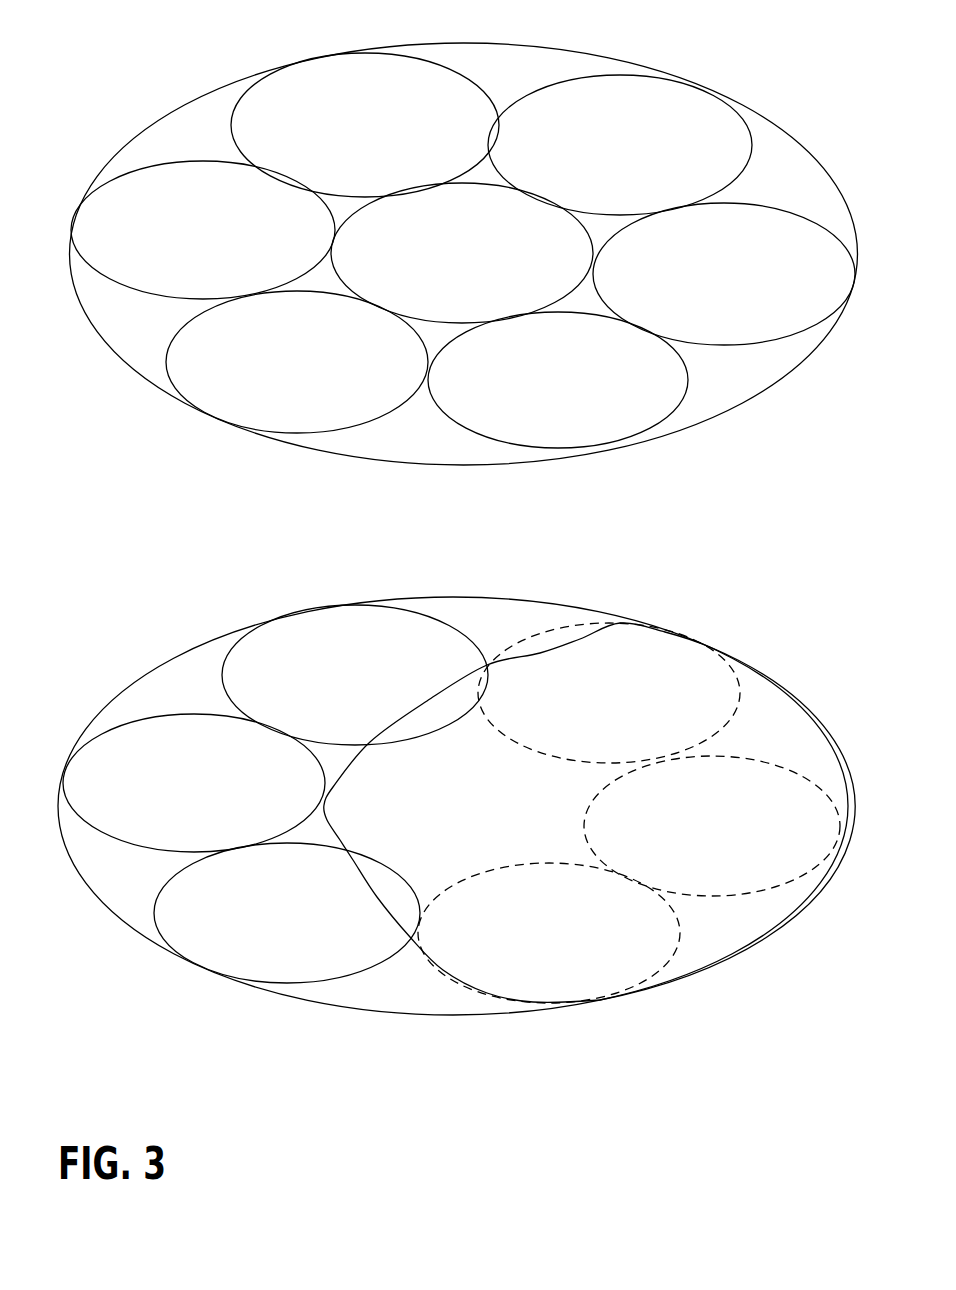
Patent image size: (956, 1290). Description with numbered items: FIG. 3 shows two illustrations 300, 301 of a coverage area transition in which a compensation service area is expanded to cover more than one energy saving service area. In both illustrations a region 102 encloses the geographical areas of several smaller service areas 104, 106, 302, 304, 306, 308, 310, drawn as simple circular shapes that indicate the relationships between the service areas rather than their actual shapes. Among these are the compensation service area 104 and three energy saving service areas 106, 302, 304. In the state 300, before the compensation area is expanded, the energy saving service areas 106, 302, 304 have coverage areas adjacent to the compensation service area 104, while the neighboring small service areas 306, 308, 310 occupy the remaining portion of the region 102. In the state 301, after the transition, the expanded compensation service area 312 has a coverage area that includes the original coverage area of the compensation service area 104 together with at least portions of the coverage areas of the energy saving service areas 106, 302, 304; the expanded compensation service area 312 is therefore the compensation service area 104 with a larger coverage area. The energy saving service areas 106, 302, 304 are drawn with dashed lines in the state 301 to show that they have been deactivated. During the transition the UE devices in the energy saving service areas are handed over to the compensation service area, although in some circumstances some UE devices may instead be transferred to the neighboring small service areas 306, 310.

The region 102 is at (518, 43).
The compensation service area 104 is at (445, 262).
The energy saving service area 106 is at (705, 286).
The state before the compensation area is expanded 300 is at (186, 500).
The state after the compensation service area is expanded 301 is at (228, 1078).
The energy saving service area 302 is at (543, 390).
The energy saving service area 304 is at (600, 154).
The neighboring small service area 306 is at (349, 132).
The service area 308 is at (184, 240).
The neighboring small service area 310 is at (280, 372).
The expanded compensation service area 312 is at (465, 672).